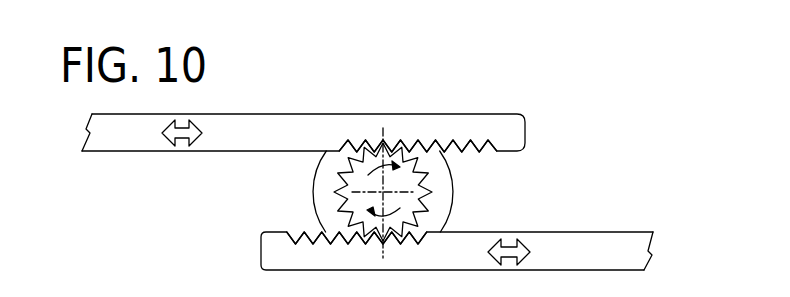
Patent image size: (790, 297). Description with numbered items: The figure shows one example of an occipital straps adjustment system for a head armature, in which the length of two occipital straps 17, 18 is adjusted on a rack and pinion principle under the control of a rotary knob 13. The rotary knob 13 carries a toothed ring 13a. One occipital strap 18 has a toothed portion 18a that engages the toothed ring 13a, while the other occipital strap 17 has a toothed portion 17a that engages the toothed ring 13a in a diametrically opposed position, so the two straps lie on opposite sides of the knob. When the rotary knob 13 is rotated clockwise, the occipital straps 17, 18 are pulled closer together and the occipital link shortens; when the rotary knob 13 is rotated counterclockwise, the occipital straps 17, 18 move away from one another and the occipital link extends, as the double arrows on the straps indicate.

The occipital strap 17 is at (275, 130).
The toothed portion 17a is at (486, 150).
The occipital strap 18 is at (620, 242).
The toothed portion 18a is at (298, 232).
The rotary knob 13 is at (452, 208).
The toothed ring 13a is at (340, 186).